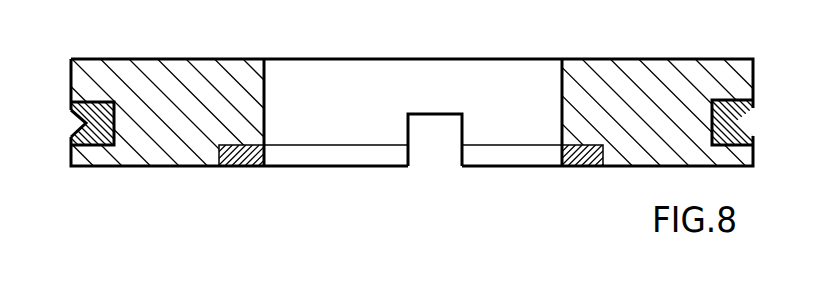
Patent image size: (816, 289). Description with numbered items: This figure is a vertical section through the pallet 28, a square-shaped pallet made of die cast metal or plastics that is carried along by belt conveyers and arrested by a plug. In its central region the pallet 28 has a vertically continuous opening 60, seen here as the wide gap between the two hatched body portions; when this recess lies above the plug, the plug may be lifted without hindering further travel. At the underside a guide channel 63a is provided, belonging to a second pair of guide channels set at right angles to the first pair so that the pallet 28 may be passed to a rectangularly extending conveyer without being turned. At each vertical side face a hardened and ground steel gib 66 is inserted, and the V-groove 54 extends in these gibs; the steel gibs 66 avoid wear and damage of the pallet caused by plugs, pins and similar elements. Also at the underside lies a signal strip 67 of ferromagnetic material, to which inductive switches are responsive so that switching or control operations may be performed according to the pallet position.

The pallet 28 is at (131, 168).
The V-groove 54 is at (71, 110).
The opening 60 is at (267, 83).
The guide channel 63a is at (412, 138).
The steel gib 66 is at (109, 102).
The signal strip 67 is at (583, 166).